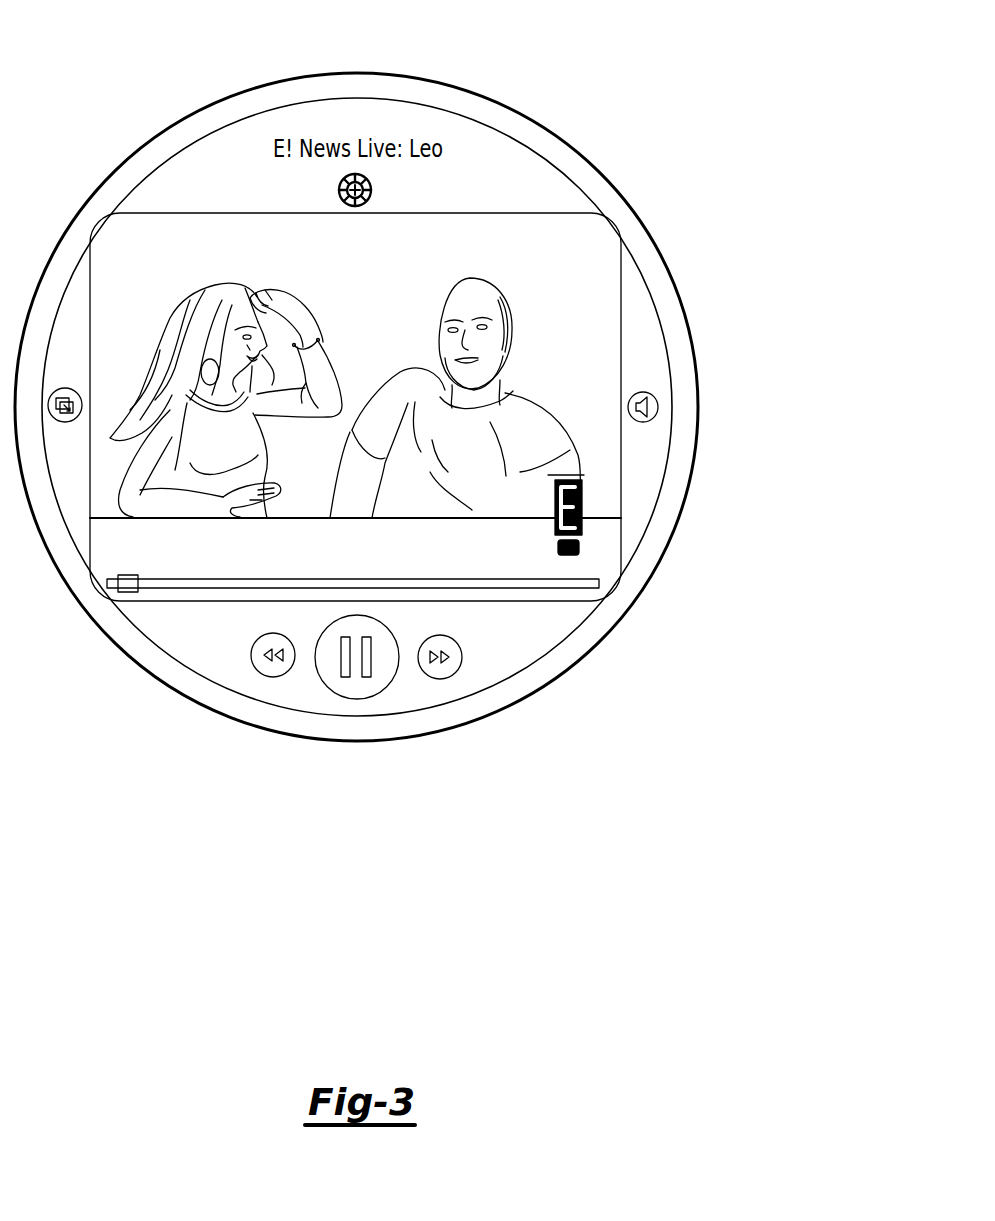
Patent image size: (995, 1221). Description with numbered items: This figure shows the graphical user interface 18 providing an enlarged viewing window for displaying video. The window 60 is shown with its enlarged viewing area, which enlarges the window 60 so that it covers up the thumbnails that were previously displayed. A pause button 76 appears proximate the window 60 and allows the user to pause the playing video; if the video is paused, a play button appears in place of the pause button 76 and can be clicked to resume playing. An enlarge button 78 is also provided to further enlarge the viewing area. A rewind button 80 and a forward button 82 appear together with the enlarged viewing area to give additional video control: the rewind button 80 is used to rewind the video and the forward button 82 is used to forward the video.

The portable media device 18 is at (552, 84).
The window 60 is at (446, 213).
The pause button 76 is at (380, 688).
The enlarge button 78 is at (65, 388).
The rewind button 80 is at (251, 652).
The forward button 82 is at (643, 392).